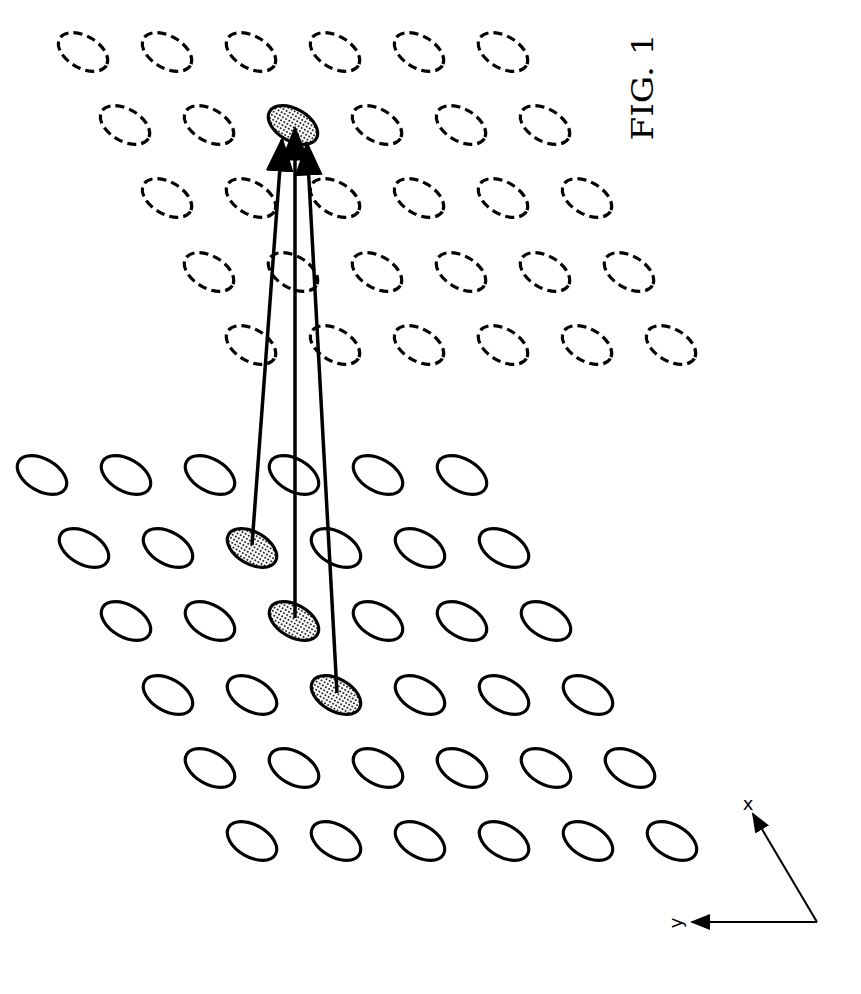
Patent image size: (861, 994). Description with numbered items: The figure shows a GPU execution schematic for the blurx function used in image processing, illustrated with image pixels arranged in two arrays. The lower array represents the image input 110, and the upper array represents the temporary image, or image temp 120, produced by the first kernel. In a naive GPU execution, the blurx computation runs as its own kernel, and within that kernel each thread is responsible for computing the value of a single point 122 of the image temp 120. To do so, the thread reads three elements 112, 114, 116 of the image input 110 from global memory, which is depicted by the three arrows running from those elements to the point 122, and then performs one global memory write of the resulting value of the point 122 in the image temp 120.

The image input 110 is at (357, 658).
The element of the image input 112 is at (346, 718).
The element of the image input 114 is at (304, 645).
The element of the image input 116 is at (262, 571).
The image temp 120 is at (377, 199).
The point of the temporary image 122 is at (272, 115).